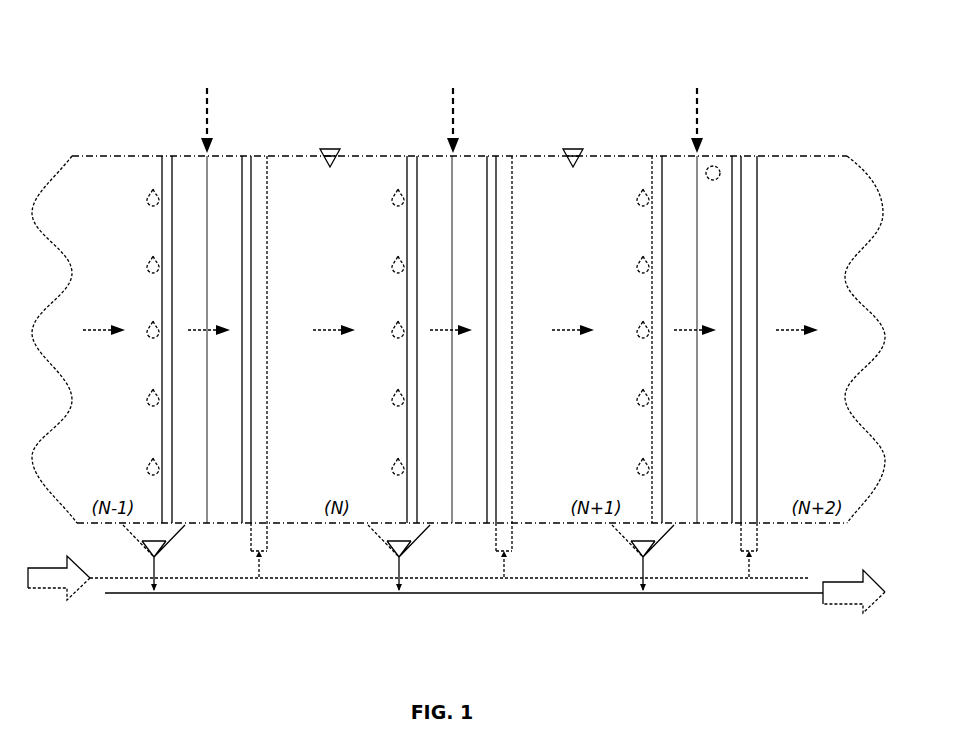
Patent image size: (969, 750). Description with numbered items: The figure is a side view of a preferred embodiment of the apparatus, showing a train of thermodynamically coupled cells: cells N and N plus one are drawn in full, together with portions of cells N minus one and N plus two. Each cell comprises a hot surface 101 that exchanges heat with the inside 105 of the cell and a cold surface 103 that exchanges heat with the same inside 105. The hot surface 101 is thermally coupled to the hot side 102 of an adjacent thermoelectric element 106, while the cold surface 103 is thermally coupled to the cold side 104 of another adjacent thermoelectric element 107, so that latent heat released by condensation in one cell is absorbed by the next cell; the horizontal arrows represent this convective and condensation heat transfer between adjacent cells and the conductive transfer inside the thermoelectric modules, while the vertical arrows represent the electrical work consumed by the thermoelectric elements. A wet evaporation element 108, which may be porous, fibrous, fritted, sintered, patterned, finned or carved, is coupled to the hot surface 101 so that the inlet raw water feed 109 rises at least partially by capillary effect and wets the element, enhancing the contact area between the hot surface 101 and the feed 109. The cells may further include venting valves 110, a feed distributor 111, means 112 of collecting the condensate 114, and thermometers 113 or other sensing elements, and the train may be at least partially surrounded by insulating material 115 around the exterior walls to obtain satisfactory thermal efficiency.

The hot surface 101 is at (243, 197).
The hot side of thermoelectric element 102 is at (224, 170).
The cold surface 103 is at (410, 178).
The cold side of thermoelectric element 104 is at (430, 170).
The inside of cell 105 is at (293, 178).
The thermoelectric element 106 is at (207, 277).
The thermoelectric element 107 is at (453, 195).
The wet evaporation element 108 is at (258, 227).
The inlet raw water feed 109 is at (53, 585).
The venting valve 110 is at (322, 153).
The feed distributor 111 is at (300, 578).
The means of collecting condensate 112 is at (320, 593).
The thermometer 113 is at (720, 172).
The condensate 114 is at (853, 595).
The insulating material 115 is at (620, 156).